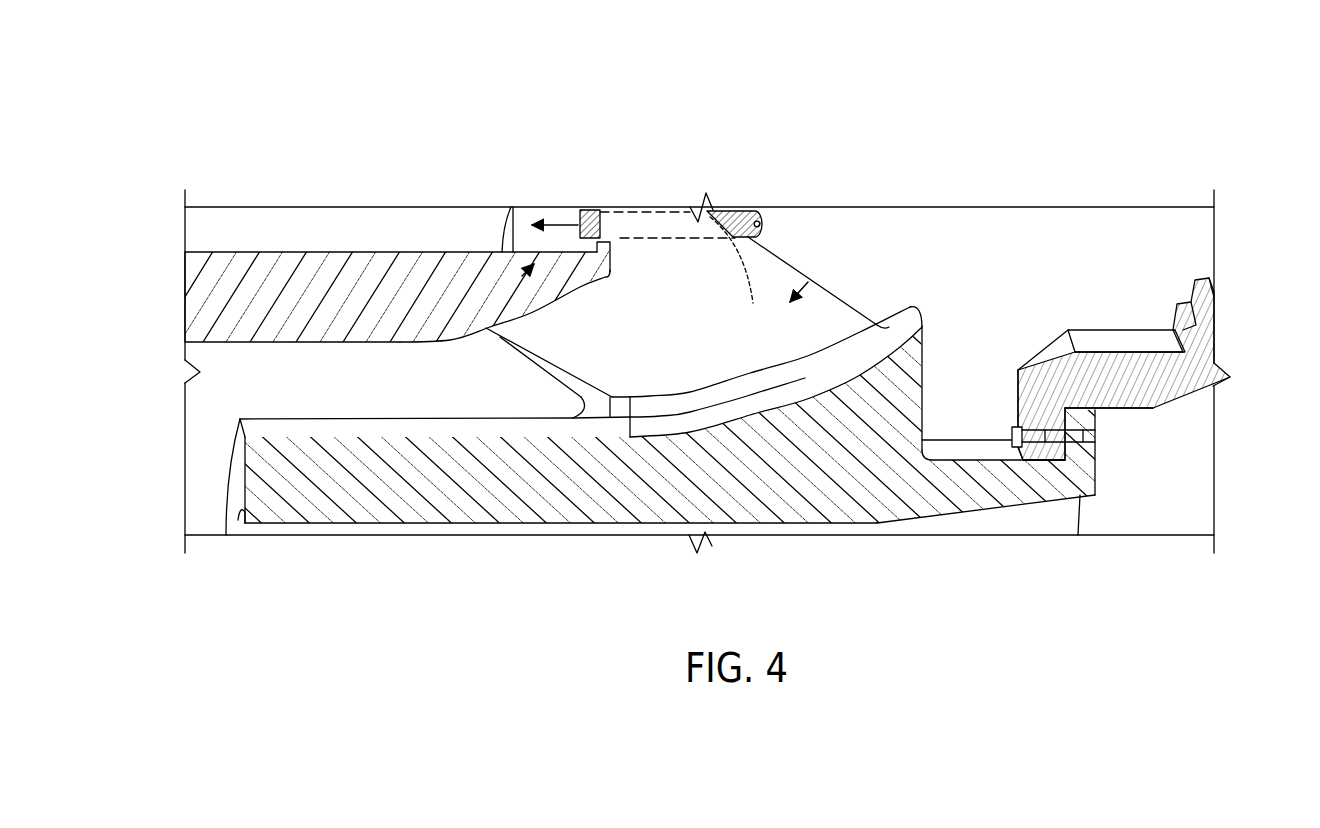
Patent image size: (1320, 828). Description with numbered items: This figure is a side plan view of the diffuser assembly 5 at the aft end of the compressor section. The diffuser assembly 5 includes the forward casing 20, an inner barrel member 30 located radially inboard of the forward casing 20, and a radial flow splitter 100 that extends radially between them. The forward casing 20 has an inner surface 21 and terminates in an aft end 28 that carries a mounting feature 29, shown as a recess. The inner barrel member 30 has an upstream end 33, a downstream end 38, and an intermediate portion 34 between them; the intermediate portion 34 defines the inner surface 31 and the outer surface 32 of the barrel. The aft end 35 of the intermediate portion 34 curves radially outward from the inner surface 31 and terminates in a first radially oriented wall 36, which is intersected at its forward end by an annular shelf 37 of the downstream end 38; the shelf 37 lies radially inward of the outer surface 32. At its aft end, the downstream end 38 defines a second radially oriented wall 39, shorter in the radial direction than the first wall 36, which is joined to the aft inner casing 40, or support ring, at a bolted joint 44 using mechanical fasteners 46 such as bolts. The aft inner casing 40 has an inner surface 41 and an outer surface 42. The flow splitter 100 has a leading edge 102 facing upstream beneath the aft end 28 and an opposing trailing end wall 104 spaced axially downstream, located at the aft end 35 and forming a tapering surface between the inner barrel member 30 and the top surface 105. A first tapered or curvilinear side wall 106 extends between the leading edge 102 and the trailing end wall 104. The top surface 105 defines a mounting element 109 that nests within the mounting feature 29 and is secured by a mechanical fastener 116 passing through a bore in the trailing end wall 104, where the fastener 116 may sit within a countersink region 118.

The diffuser assembly 5 is at (205, 106).
The forward casing 20 is at (312, 226).
The inner surface 21 is at (190, 351).
The aft end 28 is at (573, 277).
The mounting feature 29 is at (518, 280).
The inner barrel member 30 is at (207, 472).
The inner surface 31 is at (578, 538).
The outer surface 32 is at (272, 430).
The upstream end 33 is at (258, 498).
The intermediate portion 34 is at (497, 493).
The aft end 35 is at (863, 440).
The first radially oriented wall 36 is at (925, 347).
The annular shelf 37 is at (940, 445).
The downstream end 38 is at (882, 548).
The second radially oriented wall 39 is at (1098, 478).
The aft inner casing 40 is at (1085, 312).
The inner surface 41 is at (1133, 410).
The outer surface 42 is at (1152, 340).
The bolted joint 44 is at (1005, 428).
The mechanical fasteners 46 is at (1043, 415).
The radial flow splitter 100 is at (808, 282).
The leading edge 102 is at (556, 372).
The trailing end wall 104 is at (838, 292).
The top surface 105 is at (660, 202).
The first side wall 106 is at (700, 363).
The mounting element 109 is at (613, 260).
The mechanical fastener 116 is at (737, 200).
The countersink region 118 is at (741, 276).